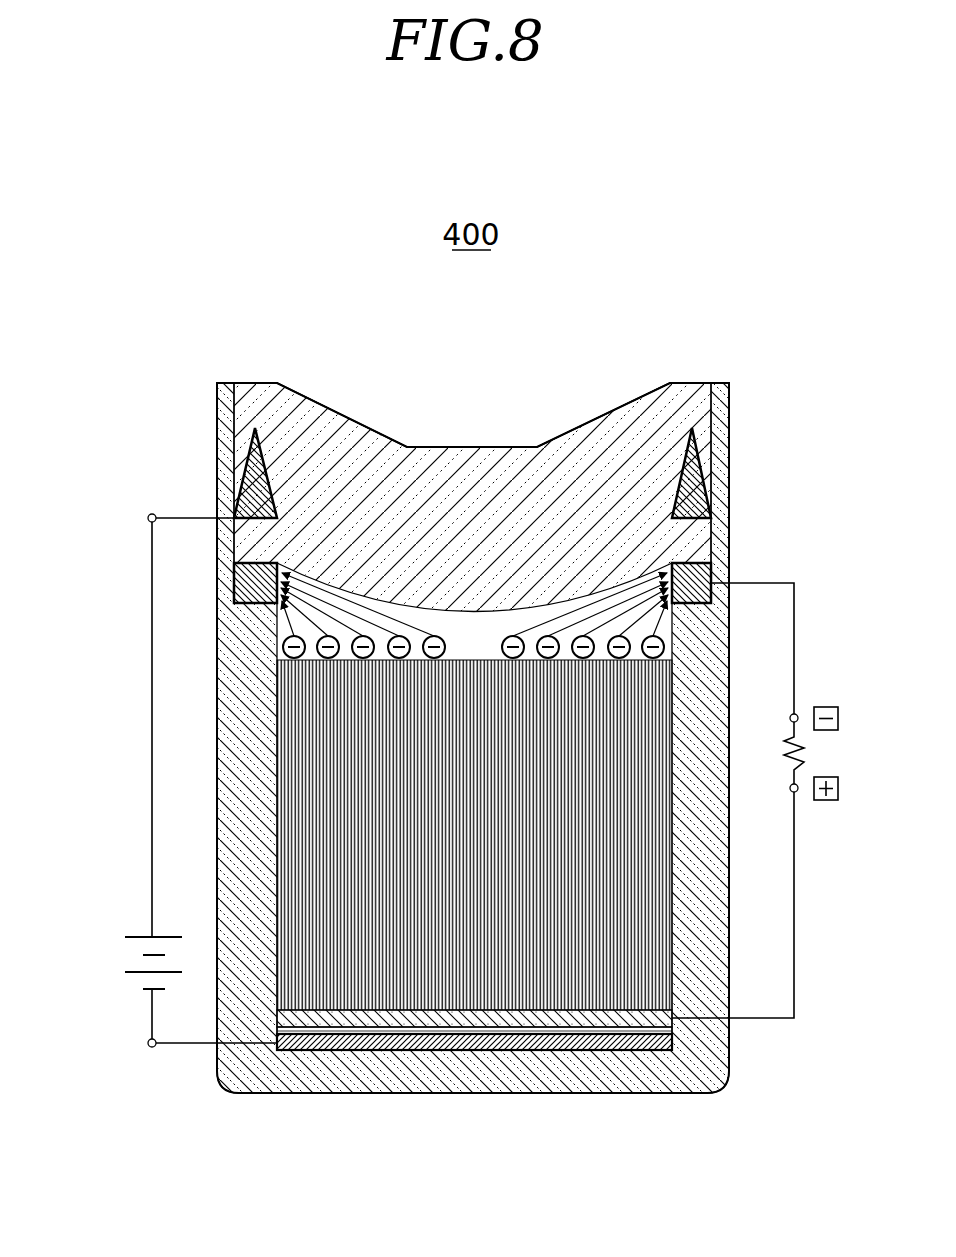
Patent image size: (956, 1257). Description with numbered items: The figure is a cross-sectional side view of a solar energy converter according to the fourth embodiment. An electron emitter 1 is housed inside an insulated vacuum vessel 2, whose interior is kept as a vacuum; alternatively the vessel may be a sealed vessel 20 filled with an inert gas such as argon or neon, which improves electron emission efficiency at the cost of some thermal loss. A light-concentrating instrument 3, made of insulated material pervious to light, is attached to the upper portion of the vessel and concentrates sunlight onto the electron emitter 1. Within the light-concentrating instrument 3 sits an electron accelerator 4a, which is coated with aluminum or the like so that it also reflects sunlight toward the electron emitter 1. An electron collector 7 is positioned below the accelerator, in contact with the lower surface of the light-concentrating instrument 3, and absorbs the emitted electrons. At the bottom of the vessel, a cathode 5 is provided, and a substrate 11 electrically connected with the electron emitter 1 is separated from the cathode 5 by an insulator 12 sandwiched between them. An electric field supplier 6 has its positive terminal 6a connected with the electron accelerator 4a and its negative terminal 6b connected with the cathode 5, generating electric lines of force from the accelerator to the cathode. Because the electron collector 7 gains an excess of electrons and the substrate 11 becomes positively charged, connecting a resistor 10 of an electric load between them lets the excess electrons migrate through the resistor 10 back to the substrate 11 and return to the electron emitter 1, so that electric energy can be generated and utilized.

The electron emitter 1 is at (357, 1050).
The vacuum vessel 2 is at (420, 1063).
The sealed vessel 20 is at (473, 738).
The light-concentrating instrument 3 is at (467, 458).
The electron accelerator 4a is at (242, 488).
The cathode 5 is at (500, 1050).
The electric field supplier 6 is at (127, 960).
The positive terminal 6a is at (148, 523).
The negative terminal 6b is at (148, 1046).
The electron collector 7 is at (236, 574).
The resistor 10 is at (810, 752).
The substrate 11 is at (600, 1050).
The insulator 12 is at (545, 1050).